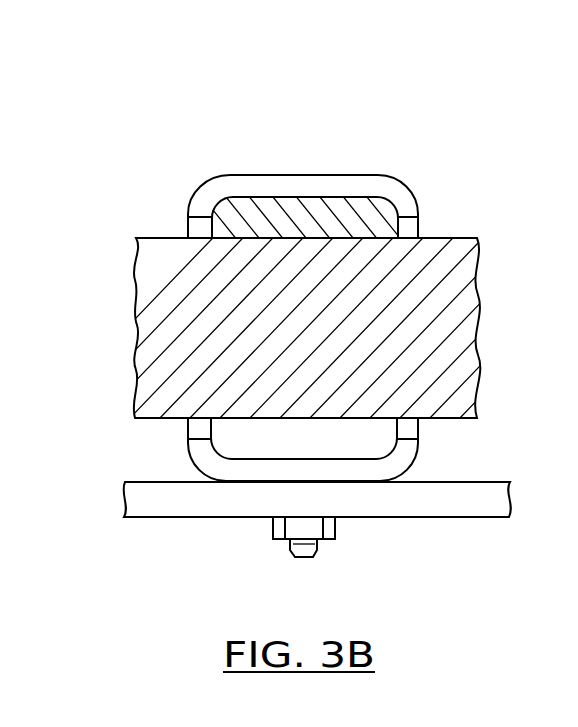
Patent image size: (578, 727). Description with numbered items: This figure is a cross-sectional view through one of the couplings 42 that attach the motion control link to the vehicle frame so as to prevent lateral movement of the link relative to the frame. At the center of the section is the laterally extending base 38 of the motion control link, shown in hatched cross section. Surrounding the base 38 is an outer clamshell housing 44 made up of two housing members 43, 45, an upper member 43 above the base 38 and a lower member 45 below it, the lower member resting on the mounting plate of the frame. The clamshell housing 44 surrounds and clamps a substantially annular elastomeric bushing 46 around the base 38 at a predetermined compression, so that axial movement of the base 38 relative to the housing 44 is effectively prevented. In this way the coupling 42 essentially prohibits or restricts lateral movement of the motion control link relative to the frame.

The base 38 is at (455, 250).
The coupling 42 is at (222, 111).
The housing member 43 is at (407, 202).
The outer clamshell housing 44 is at (324, 167).
The housing member 45 is at (411, 452).
The elastomeric bushing 46 is at (240, 210).